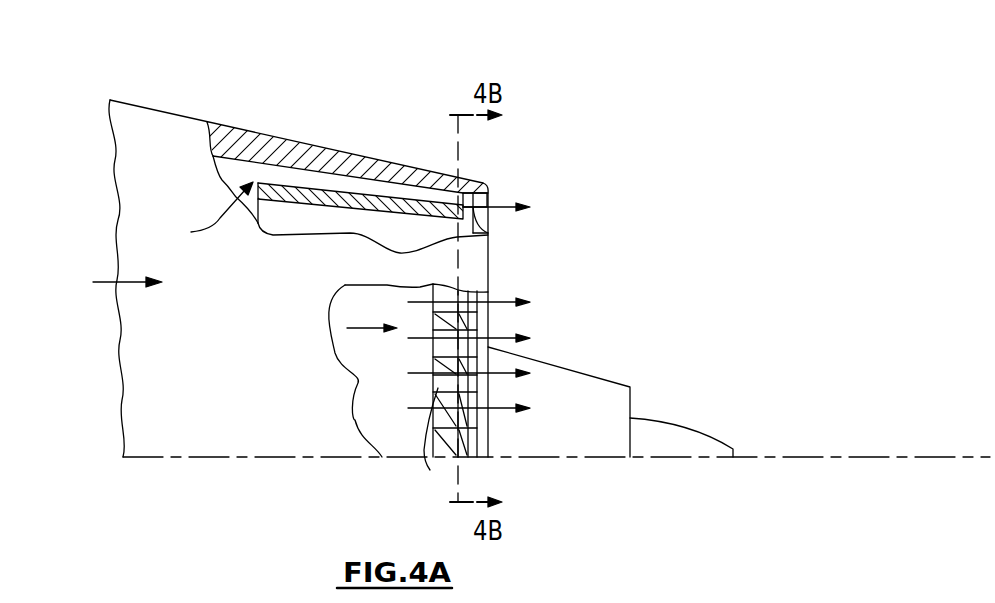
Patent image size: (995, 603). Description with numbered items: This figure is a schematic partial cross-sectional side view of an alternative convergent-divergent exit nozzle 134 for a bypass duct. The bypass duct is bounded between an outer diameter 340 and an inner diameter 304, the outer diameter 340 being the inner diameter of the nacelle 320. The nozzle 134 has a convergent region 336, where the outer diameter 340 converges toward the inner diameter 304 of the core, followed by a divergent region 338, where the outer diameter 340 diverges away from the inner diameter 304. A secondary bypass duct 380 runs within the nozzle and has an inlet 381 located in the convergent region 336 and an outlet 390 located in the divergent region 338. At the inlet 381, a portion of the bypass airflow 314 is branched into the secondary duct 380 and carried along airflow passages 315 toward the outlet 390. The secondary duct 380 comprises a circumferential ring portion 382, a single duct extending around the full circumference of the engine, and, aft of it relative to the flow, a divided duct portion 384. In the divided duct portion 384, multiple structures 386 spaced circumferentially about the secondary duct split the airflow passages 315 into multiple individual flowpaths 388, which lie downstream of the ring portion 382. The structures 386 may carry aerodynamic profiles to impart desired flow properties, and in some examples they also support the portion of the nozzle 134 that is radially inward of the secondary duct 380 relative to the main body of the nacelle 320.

The convergent-divergent exit nozzle 134 is at (588, 68).
The inner diameter 304 is at (487, 340).
The bypass airflow 314 is at (103, 280).
The airflow passages 315 is at (495, 203).
The nacelle 320 is at (129, 104).
The convergent region 336 is at (325, 196).
The divergent region 338 is at (443, 200).
The outer diameter 340 is at (236, 168).
The secondary bypass duct 380 is at (316, 172).
The inlet 381 is at (246, 165).
The circumferential ring portion 382 is at (373, 188).
The divided duct portion 384 is at (442, 205).
The structures 386 is at (441, 400).
The individual flowpaths 388 is at (474, 402).
The outlet 390 is at (490, 231).